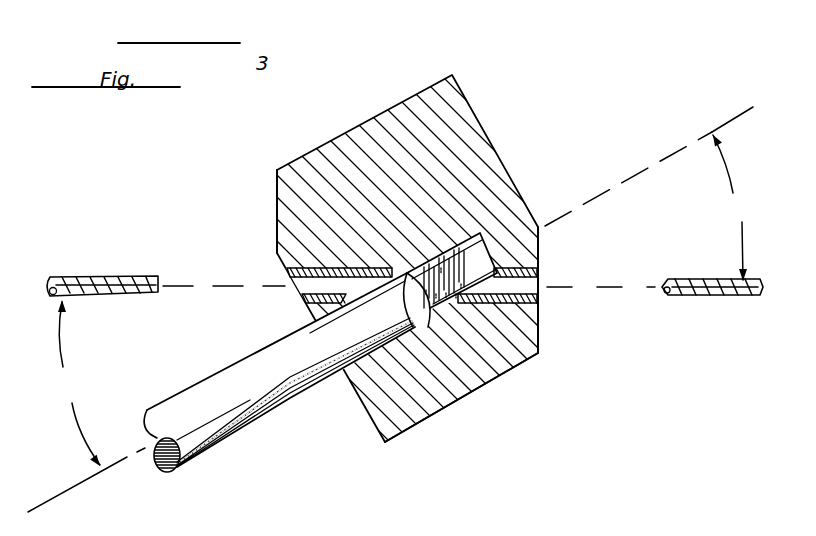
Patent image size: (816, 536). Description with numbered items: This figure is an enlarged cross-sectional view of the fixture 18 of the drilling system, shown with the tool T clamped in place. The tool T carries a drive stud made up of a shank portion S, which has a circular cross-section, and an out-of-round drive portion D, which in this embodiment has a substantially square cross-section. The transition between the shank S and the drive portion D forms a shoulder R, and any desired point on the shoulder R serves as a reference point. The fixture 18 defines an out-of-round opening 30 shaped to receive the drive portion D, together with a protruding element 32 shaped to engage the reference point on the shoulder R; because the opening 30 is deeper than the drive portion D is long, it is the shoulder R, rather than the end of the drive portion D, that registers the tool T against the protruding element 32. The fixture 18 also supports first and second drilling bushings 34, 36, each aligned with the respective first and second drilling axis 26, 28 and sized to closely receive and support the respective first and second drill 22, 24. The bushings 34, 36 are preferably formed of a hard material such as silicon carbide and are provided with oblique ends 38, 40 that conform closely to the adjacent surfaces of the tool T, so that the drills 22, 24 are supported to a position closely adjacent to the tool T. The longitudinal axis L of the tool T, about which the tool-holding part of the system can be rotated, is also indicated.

The fixture 18 is at (472, 238).
The first drill 22 is at (86, 276).
The second drill 24 is at (718, 294).
The first drilling axis 26 is at (174, 286).
The second drilling axis 28 is at (640, 287).
The out-of-round opening 30 is at (487, 240).
The protruding element 32 is at (462, 335).
The first drilling bushing 34 is at (277, 171).
The second drilling bushing 36 is at (538, 247).
The oblique end 38 is at (398, 266).
The oblique end 40 is at (529, 358).
The drive portion D is at (455, 247).
The longitudinal axis L is at (727, 121).
The shoulder R is at (433, 322).
The shank portion S is at (193, 398).
The tool T is at (190, 468).